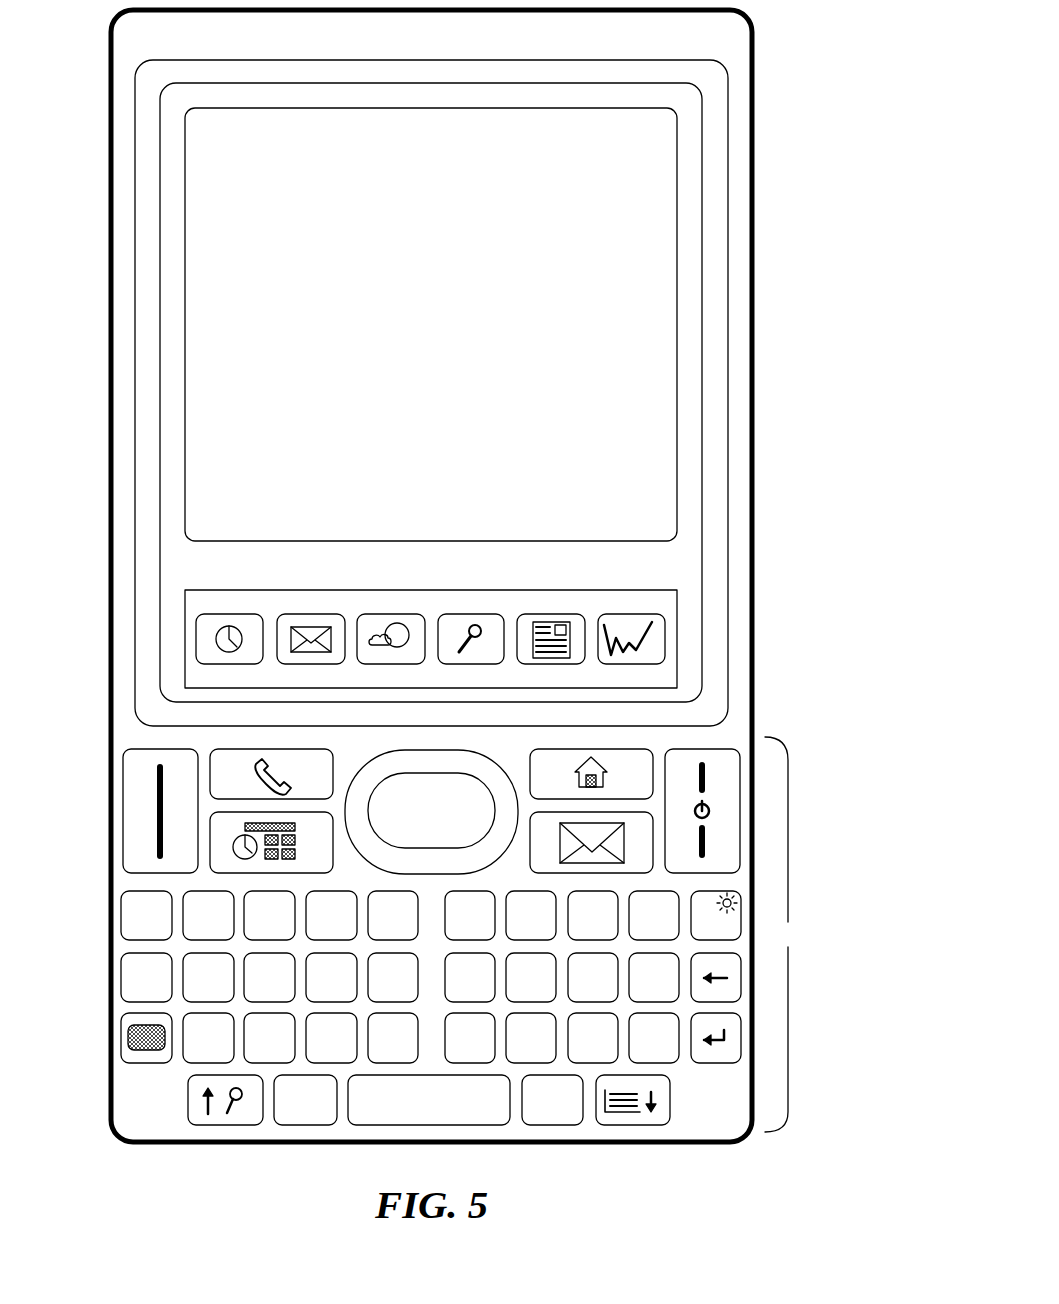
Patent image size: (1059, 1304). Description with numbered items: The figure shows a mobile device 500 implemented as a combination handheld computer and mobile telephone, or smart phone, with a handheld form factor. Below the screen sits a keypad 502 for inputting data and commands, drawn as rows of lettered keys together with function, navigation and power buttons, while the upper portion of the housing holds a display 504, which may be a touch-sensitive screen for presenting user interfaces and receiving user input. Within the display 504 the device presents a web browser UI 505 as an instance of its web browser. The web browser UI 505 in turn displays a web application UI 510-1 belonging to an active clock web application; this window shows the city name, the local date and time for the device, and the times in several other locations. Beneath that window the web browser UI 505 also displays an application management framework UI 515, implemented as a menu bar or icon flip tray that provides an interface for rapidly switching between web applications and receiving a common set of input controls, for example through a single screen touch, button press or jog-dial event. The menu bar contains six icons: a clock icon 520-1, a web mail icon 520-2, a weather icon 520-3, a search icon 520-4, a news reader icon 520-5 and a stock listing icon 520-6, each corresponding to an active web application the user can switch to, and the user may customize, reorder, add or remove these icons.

The mobile device 500 is at (762, 47).
The keypad 502 is at (461, 934).
The display 504 is at (725, 133).
The web browser UI 505 is at (702, 207).
The web application UI 510-1 is at (677, 324).
The application management framework UI 515 is at (677, 640).
The clock icon 520-1 is at (212, 614).
The web mail icon 520-2 is at (292, 614).
The weather icon 520-3 is at (373, 614).
The search icon 520-4 is at (455, 614).
The news reader icon 520-5 is at (536, 614).
The stock listing icon 520-6 is at (613, 614).